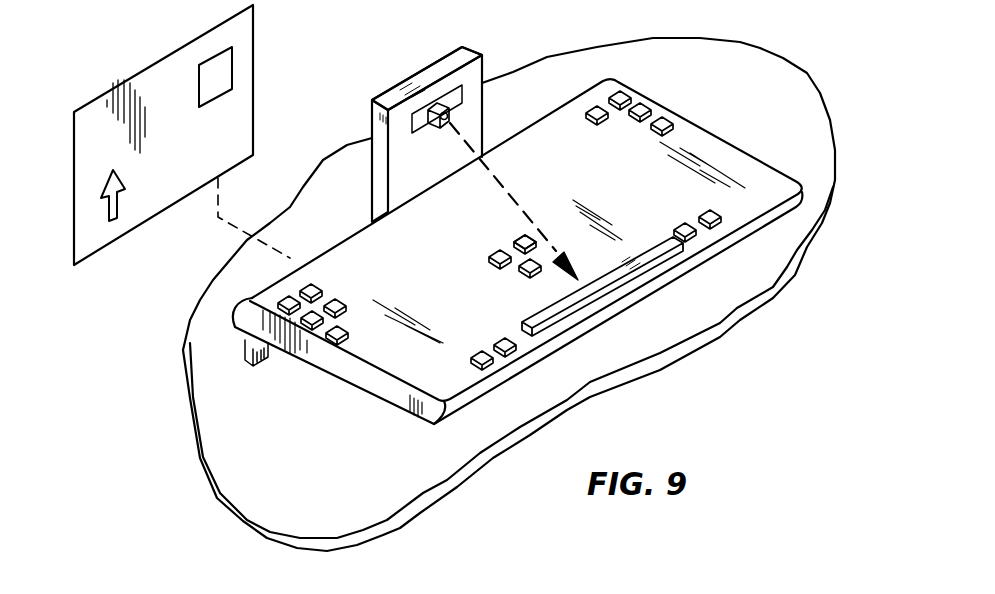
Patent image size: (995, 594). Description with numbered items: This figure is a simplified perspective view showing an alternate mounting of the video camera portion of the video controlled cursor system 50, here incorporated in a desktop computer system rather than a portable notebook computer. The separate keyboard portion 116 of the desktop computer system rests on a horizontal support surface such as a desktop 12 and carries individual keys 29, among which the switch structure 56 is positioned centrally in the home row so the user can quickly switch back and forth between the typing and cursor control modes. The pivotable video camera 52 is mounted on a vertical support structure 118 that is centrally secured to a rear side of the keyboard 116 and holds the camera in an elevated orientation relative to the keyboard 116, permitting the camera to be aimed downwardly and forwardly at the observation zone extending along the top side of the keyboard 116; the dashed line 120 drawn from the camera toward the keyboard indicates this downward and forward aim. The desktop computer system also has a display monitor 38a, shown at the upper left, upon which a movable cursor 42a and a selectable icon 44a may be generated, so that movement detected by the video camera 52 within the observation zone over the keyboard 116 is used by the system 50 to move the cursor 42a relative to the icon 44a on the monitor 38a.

The desktop 12 is at (778, 110).
The keys 29 is at (641, 104).
The display monitor 38a is at (222, 161).
The movable cursor 42a is at (109, 210).
The selectable icon 44a is at (232, 67).
The video controlled cursor system 50 is at (488, 63).
The video camera 52 is at (436, 101).
The switch structure 56 is at (501, 214).
The keyboard portion 116 is at (376, 402).
The vertical support structure 118 is at (372, 129).
The sensing beam path 120 is at (500, 185).